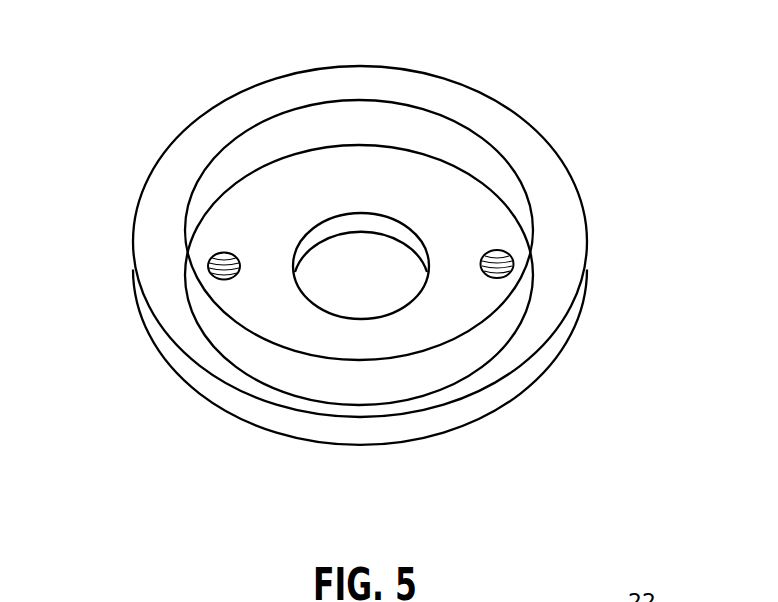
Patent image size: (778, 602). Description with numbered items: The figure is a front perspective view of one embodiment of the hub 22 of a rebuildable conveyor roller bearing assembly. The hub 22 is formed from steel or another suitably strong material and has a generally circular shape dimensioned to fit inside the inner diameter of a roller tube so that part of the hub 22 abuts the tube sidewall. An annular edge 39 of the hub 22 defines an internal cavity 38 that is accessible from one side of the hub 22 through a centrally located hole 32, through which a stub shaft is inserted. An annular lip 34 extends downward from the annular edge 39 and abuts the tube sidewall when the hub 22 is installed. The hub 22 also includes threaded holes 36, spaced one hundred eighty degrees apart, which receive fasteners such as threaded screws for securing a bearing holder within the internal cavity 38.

The hub 22 is at (482, 64).
The centrally located hole 32 is at (317, 278).
The annular lip 34 is at (560, 327).
The threaded hole 36 is at (210, 263).
The internal cavity 38 is at (252, 190).
The annular edge 39 is at (470, 360).